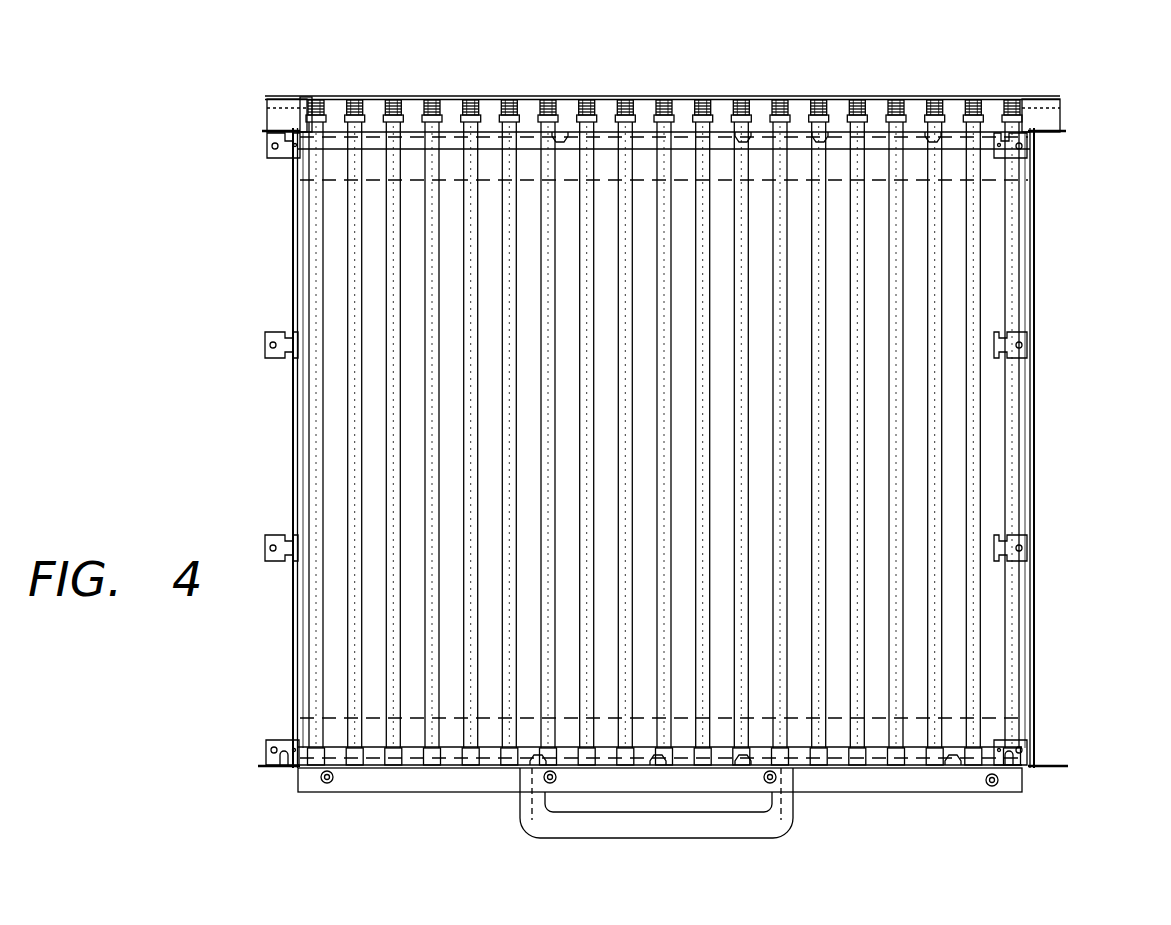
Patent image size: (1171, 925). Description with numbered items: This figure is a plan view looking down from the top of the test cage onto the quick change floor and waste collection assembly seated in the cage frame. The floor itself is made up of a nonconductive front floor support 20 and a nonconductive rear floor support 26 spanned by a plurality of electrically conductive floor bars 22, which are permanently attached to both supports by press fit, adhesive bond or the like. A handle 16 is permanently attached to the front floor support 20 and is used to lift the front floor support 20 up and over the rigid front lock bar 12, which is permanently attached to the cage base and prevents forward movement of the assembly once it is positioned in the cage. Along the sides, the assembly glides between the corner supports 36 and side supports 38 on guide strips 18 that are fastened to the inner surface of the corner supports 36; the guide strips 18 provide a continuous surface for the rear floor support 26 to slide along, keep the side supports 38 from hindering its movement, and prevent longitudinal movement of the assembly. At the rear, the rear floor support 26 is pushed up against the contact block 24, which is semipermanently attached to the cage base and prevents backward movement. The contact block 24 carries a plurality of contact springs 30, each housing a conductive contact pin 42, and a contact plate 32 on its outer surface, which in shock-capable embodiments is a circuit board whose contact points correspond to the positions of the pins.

The front lock bar 12 is at (897, 783).
The handle 16 is at (735, 823).
The guide strips 18 is at (265, 132).
The front floor support 20 is at (982, 758).
The floor bars 22 is at (782, 127).
The contact block 24 is at (282, 105).
The rear floor support 26 is at (418, 140).
The contact springs 30 is at (578, 100).
The contact plate 32 is at (310, 97).
The corner supports 36 is at (272, 153).
The side supports 38 is at (268, 537).
The contact pins 42 is at (625, 100).